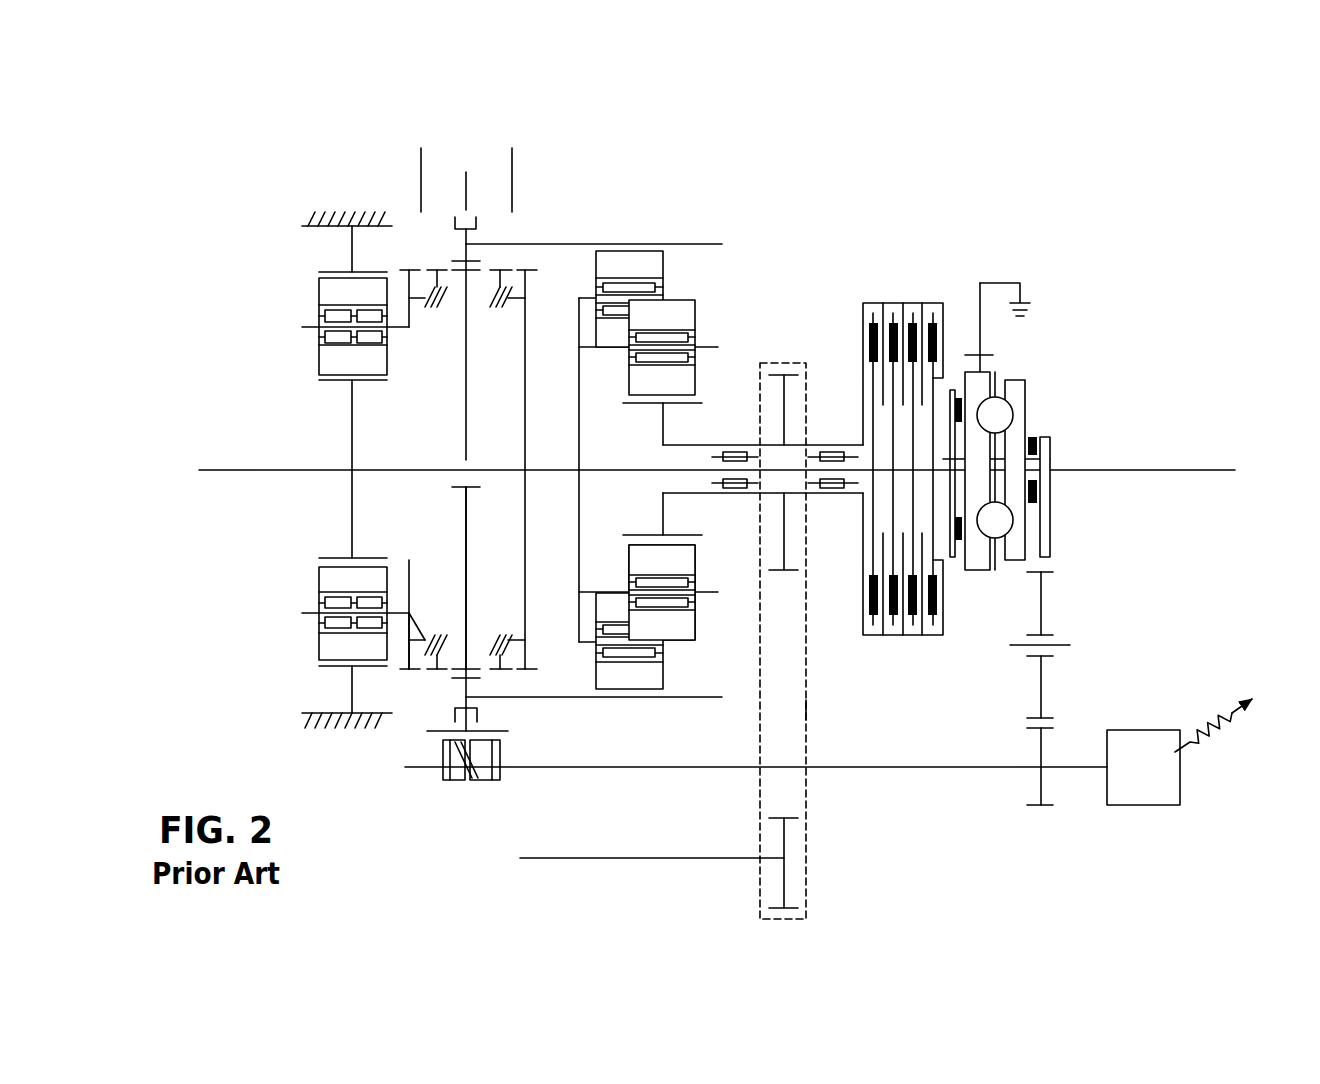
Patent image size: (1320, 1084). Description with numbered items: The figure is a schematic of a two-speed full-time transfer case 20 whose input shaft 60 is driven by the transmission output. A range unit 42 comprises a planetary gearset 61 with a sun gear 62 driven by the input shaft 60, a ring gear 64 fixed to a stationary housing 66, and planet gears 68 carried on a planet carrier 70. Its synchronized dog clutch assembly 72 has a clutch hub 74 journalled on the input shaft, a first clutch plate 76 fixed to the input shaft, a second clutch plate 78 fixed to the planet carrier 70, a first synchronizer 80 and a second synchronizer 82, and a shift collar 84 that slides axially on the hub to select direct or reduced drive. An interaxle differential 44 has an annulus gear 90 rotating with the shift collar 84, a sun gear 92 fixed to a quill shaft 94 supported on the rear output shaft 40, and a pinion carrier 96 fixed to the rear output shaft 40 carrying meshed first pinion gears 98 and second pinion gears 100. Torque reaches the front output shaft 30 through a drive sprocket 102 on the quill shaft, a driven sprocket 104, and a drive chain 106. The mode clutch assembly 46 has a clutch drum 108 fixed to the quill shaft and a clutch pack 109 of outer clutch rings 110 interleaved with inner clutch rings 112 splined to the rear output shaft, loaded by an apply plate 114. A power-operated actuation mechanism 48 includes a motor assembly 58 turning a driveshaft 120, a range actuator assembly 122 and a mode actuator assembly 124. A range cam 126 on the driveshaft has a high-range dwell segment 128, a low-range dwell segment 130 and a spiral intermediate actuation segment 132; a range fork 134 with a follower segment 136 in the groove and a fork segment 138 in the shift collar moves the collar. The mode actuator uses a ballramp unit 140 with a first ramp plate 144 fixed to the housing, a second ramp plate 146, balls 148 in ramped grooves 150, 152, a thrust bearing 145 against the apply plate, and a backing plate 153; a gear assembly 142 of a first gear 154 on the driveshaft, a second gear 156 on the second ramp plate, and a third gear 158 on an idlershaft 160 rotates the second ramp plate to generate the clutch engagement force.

The transfer case 20 is at (935, 118).
The front output shaft 30 is at (622, 858).
The rear output shaft 40 is at (1232, 470).
The range unit 42 is at (518, 220).
The interaxle differential 44 is at (718, 288).
The mode clutch assembly 46 is at (929, 282).
The power-operated actuation mechanism 48 is at (977, 828).
The motor assembly 58 is at (1145, 747).
The input shaft 60 is at (256, 470).
The planetary gearset 61 is at (300, 672).
The sun gear 62 is at (352, 402).
The ring gear 64 is at (340, 272).
The stationary housing 66 is at (302, 226).
The planet gears 68 is at (320, 575).
The planet carrier 70 is at (396, 613).
The synchronized dog clutch assembly 72 is at (445, 332).
The clutch hub 74 is at (467, 578).
The first clutch plate 76 is at (525, 377).
The second clutch plate 78 is at (413, 630).
The first synchronizer 80 is at (500, 282).
The second synchronizer 82 is at (440, 663).
The shift collar 84 is at (462, 240).
The annulus gear 90 is at (560, 244).
The sun gear 92 is at (668, 527).
The quill shaft 94 is at (677, 444).
The pinion carrier 96 is at (582, 428).
The first pinion gears 98 is at (652, 262).
The second pinion gears 100 is at (690, 313).
The drive sprocket 102 is at (767, 535).
The driven sprocket 104 is at (784, 834).
The drive chain 106 is at (806, 710).
The clutch drum 108 is at (862, 308).
The clutch pack 109 is at (884, 427).
The outer clutch rings 110 is at (884, 312).
The inner clutch rings 112 is at (893, 493).
The apply plate 114 is at (943, 545).
The driveshaft 120 is at (920, 767).
The range actuator assembly 122 is at (453, 796).
The mode actuator assembly 124 is at (1103, 702).
The range cam 126 is at (462, 777).
The high-range dwell segment 128 is at (493, 752).
The low-range dwell segment 130 is at (445, 758).
The spiral intermediate actuation segment 132 is at (487, 772).
The range fork 134 is at (490, 732).
The follower segment 136 is at (468, 780).
The fork segment 138 is at (465, 728).
The ballramp unit 140 is at (1030, 370).
The gear assembly 142 is at (1052, 680).
The first ramp plate 144 is at (978, 390).
The thrust bearing 145 is at (948, 388).
The second ramp plate 146 is at (1005, 417).
The balls 148 is at (1022, 400).
The ramped grooves 150 is at (997, 535).
The ramped grooves 152 is at (1008, 520).
The backing plate 153 is at (1037, 440).
The first gear 154 is at (1050, 805).
The second gear 156 is at (1040, 543).
The third gear 158 is at (1041, 605).
The idlershaft 160 is at (1022, 645).